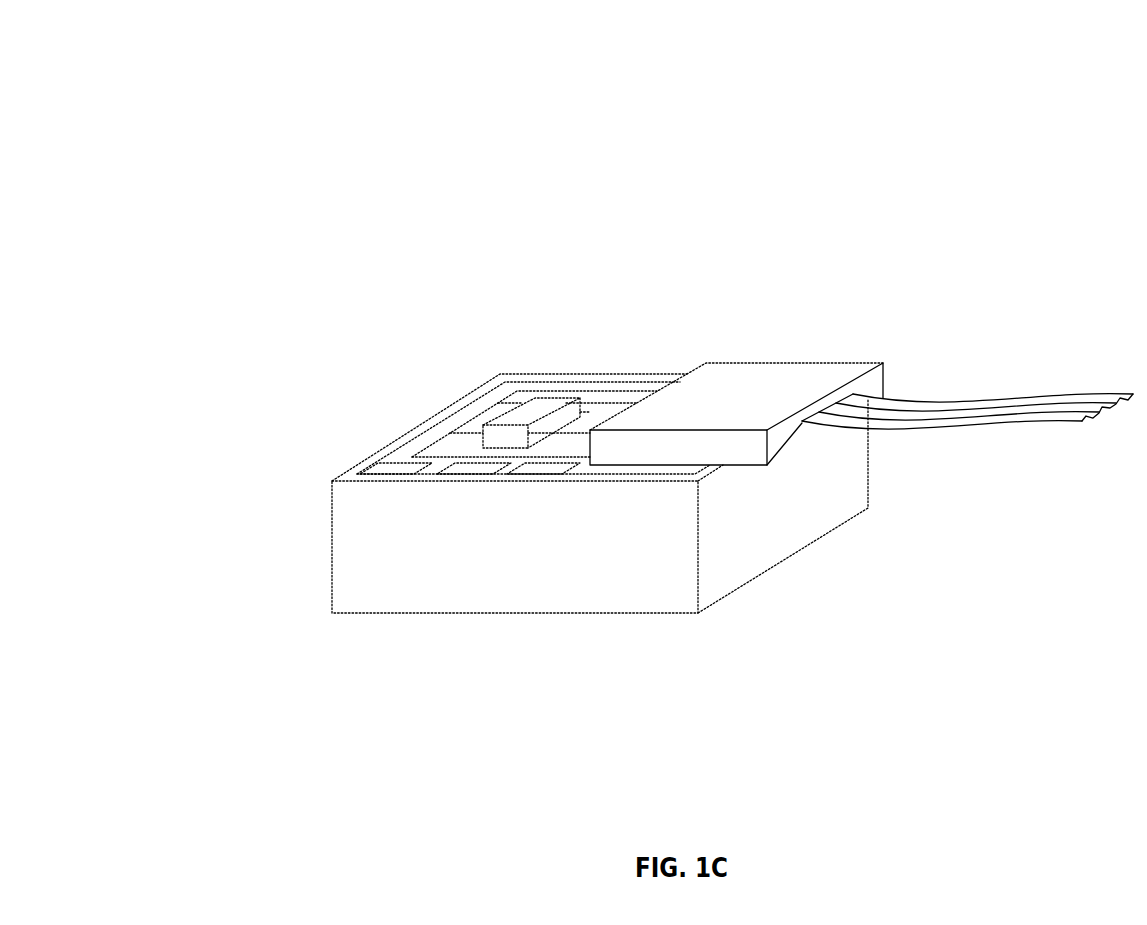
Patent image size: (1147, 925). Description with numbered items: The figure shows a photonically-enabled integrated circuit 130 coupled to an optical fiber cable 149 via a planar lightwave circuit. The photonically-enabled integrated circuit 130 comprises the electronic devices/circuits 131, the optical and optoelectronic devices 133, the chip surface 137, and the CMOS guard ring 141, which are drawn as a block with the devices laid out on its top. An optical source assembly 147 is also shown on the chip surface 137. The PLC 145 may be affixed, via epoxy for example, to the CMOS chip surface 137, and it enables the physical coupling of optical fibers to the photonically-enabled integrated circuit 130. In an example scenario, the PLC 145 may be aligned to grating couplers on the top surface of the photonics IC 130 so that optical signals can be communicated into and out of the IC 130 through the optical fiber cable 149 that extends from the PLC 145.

The photonically-enabled integrated circuit 130 is at (300, 100).
The electronic devices/circuits 131 is at (523, 470).
The optical and optoelectronic devices 133 is at (470, 455).
The chip surface 137 is at (460, 428).
The CMOS guard ring 141 is at (774, 552).
The PLC 145 is at (739, 421).
The optical source assembly 147 is at (540, 405).
The optical fiber cable 149 is at (1060, 393).